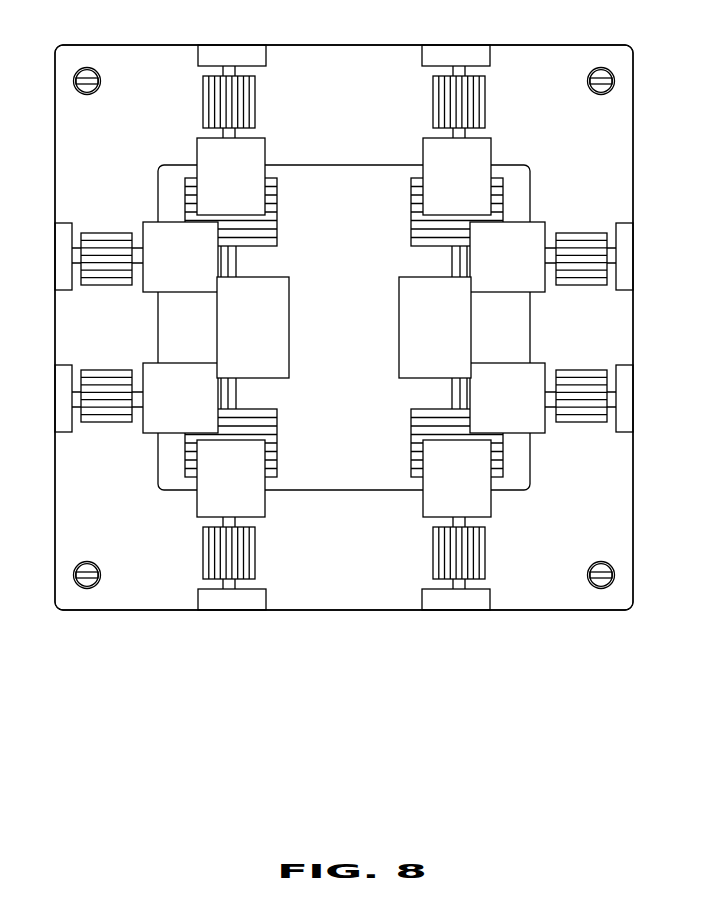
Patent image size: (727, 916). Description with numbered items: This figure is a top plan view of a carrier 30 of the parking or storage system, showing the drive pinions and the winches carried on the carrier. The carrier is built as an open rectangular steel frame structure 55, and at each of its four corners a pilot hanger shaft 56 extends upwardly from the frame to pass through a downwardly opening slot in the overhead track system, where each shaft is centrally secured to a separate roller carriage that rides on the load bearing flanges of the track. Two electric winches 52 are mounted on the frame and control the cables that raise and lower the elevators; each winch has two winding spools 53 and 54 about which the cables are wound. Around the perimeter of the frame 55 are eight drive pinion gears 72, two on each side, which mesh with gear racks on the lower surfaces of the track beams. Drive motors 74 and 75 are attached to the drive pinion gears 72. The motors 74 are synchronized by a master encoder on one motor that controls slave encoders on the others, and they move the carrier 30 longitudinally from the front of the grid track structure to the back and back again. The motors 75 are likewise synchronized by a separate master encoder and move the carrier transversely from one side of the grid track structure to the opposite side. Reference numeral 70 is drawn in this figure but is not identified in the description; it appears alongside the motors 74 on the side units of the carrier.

The carrier 30 is at (137, 627).
The electric winches 52 is at (268, 303).
The winding spool 53 is at (268, 222).
The winding spool 54 is at (272, 430).
The open rectangular steel frame structure 55 is at (550, 612).
The pilot hanger shafts 56 is at (72, 80).
The side adjustment knobs 70 is at (108, 233).
The drive pinion gears 72 is at (245, 104).
The drive motors 74 is at (152, 227).
The drive motors 75 is at (262, 150).